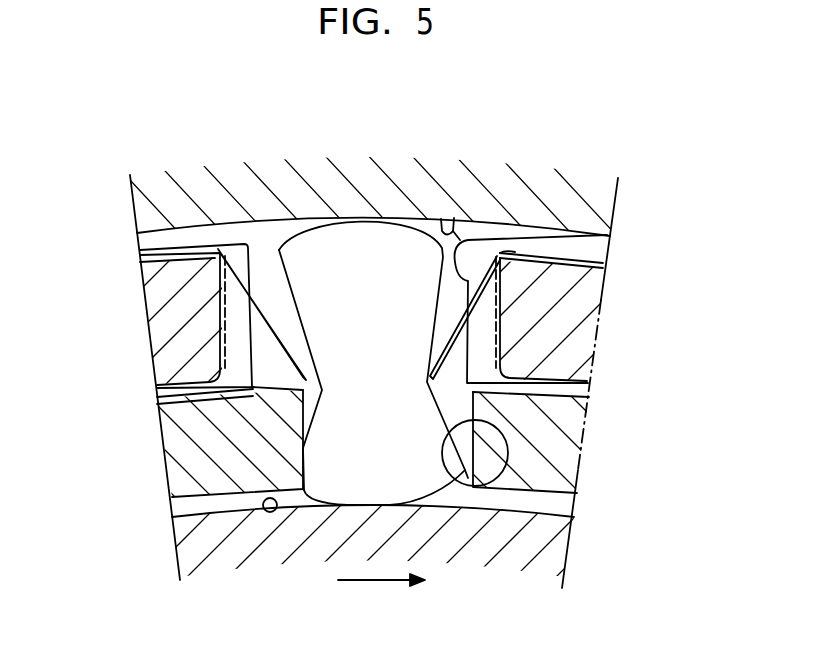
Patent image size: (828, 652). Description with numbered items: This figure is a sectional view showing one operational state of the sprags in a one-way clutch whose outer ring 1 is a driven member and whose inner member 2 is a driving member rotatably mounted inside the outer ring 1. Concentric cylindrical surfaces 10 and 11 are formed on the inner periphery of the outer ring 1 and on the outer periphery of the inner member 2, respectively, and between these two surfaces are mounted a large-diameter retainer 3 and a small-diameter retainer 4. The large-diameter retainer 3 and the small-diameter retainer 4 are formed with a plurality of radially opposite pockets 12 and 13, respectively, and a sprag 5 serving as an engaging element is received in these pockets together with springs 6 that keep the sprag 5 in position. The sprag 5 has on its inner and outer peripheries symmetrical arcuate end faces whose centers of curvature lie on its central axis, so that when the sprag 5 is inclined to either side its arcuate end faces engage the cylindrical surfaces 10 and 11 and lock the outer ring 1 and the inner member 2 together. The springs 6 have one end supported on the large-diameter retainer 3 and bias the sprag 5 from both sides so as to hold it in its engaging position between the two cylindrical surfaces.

The outer ring 1 is at (592, 198).
The inner member 2 is at (540, 533).
The large-diameter retainer 3 is at (170, 320).
The small-diameter retainer 4 is at (187, 438).
The sprag 5 is at (345, 255).
The spring 6 is at (246, 335).
The cylindrical surface 10 is at (451, 218).
The cylindrical surface 11 is at (264, 511).
The pocket 12 is at (460, 240).
The pocket 13 is at (450, 478).